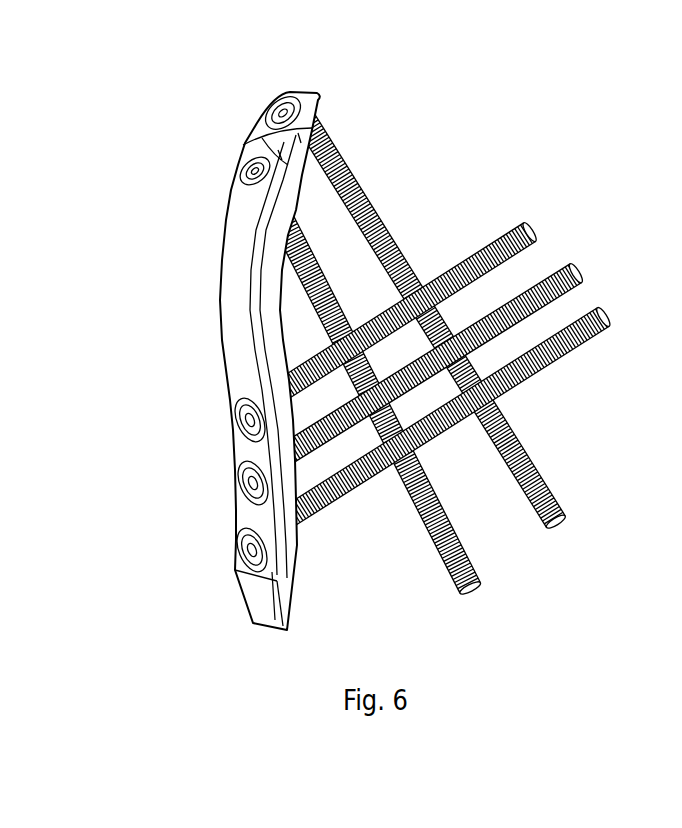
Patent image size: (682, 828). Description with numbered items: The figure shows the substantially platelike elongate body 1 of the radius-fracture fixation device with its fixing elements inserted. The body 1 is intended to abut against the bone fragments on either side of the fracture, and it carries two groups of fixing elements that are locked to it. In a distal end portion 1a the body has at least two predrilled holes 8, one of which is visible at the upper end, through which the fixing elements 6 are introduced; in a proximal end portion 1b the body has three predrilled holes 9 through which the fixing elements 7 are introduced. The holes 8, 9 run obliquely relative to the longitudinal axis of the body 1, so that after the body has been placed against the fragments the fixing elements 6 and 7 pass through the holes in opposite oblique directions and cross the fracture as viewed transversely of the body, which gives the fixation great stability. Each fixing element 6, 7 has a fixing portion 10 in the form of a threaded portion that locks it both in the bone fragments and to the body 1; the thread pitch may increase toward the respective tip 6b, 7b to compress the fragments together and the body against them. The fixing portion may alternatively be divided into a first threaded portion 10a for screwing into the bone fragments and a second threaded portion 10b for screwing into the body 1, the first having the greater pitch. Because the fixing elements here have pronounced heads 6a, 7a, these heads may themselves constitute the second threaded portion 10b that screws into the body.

The elongate body 1 is at (209, 306).
The distal end portion 1a is at (303, 140).
The proximal end portion 1b is at (243, 592).
The fixing element 6 is at (331, 252).
The head 6a is at (235, 178).
The tip 6b is at (550, 532).
The fixing element 7 is at (560, 297).
The head 7a is at (234, 413).
The tip 7b is at (533, 222).
The predrilled hole 8 is at (300, 95).
The predrilled hole 9 is at (273, 613).
The fixing portion 10 is at (478, 301).
The first threaded portion 10a is at (478, 357).
The second threaded portion 10b is at (237, 188).